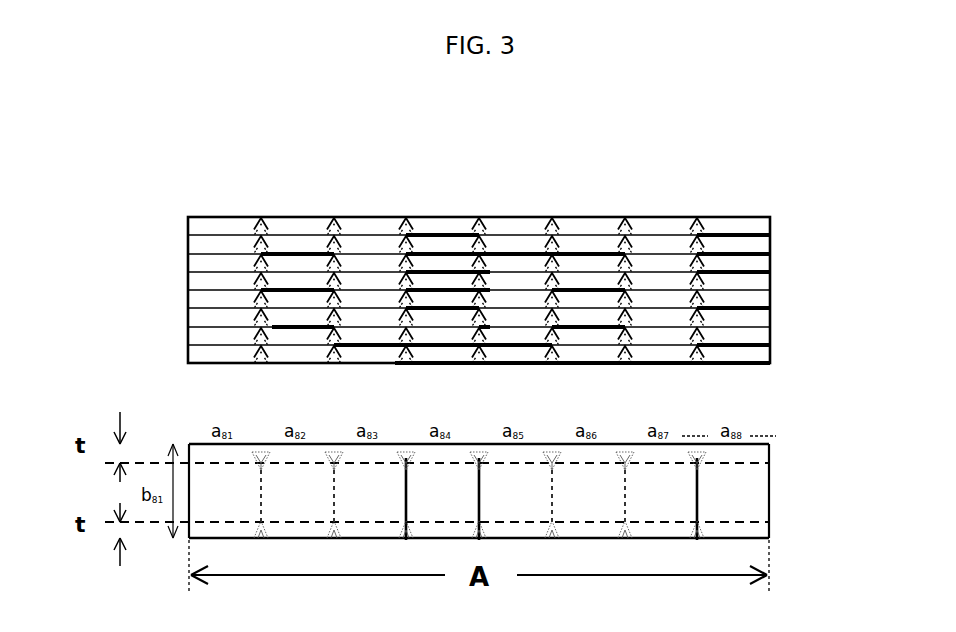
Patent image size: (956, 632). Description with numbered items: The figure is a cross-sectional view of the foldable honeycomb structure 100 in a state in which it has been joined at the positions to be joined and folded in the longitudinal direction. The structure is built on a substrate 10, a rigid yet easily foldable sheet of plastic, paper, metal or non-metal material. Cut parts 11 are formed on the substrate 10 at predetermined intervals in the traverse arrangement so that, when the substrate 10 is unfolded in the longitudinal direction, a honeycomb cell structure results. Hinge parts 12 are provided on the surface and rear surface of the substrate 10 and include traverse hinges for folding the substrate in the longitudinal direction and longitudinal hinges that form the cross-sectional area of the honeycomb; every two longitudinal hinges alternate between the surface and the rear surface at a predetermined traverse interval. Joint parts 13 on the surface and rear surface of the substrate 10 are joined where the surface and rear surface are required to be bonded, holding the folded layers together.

The foldable honeycomb structure 100 is at (110, 160).
The substrate 10 is at (770, 268).
The cut parts 11 is at (209, 254).
The hinge parts 12 is at (261, 217).
The joint parts 13 is at (748, 232).